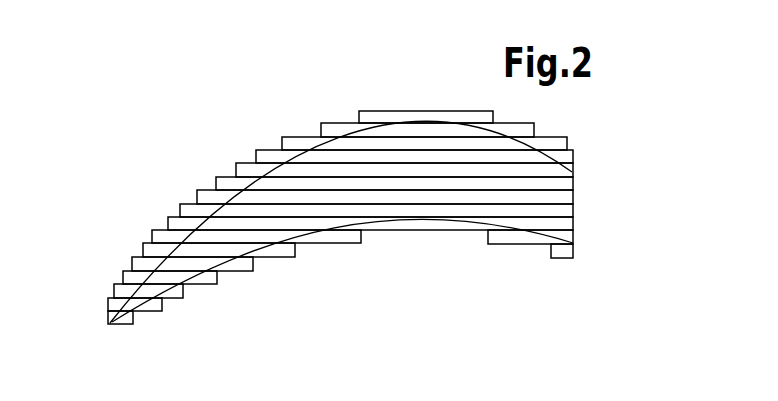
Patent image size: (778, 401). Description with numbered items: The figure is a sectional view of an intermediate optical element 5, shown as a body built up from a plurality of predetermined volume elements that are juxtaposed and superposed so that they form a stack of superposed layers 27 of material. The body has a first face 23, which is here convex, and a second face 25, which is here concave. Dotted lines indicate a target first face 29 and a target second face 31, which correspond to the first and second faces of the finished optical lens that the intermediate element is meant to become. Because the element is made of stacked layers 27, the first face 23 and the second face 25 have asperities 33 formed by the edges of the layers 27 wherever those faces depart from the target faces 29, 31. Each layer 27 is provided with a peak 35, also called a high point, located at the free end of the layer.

The intermediate optical element 5 is at (537, 290).
The first face 23 is at (372, 110).
The second face 25 is at (333, 245).
The layers 27 is at (565, 159).
The target first face 29 is at (262, 160).
The target second face 31 is at (163, 288).
The asperities 33 is at (138, 249).
The peak 35 is at (180, 205).